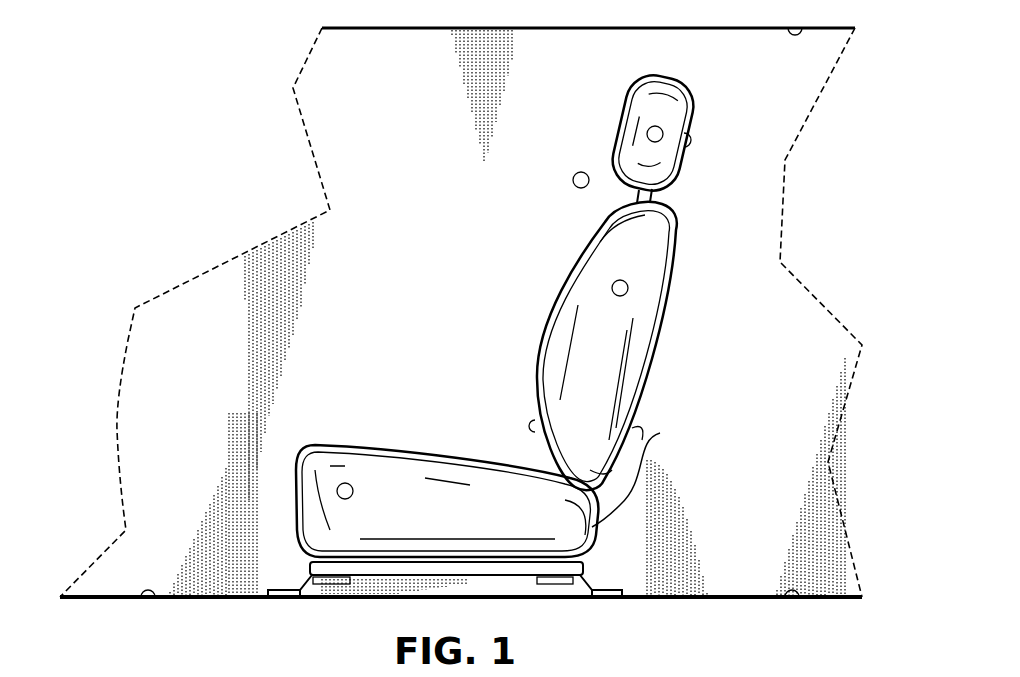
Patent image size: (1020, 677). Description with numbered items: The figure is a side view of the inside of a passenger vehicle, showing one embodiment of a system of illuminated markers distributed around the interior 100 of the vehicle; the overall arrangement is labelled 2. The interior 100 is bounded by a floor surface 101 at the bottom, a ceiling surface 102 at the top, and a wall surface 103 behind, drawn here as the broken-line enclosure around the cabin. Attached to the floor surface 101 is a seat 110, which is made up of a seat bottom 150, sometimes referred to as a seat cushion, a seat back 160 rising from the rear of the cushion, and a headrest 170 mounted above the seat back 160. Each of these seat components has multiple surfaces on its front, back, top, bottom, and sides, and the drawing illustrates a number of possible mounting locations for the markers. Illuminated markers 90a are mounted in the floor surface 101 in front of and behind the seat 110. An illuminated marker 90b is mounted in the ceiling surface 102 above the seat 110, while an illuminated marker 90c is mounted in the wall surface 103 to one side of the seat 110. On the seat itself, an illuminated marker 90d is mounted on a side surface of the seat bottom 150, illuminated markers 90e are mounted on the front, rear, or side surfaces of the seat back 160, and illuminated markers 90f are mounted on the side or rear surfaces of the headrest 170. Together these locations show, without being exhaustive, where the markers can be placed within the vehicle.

The vehicle seat 2 is at (502, 321).
The interior 100 is at (335, 145).
The floor surface 101 is at (735, 594).
The ceiling surface 102 is at (740, 33).
The wall surface 103 is at (466, 217).
The seat 110 is at (288, 457).
The seat bottom 150 is at (654, 472).
The seat back 160 is at (650, 366).
The headrest 170 is at (620, 108).
The illuminated markers 90a is at (147, 591).
The illuminated marker 90b is at (796, 38).
The illuminated marker 90c is at (575, 171).
The illuminated marker 90d is at (334, 493).
The illuminated markers 90e is at (637, 434).
The illuminated markers 90f is at (661, 149).